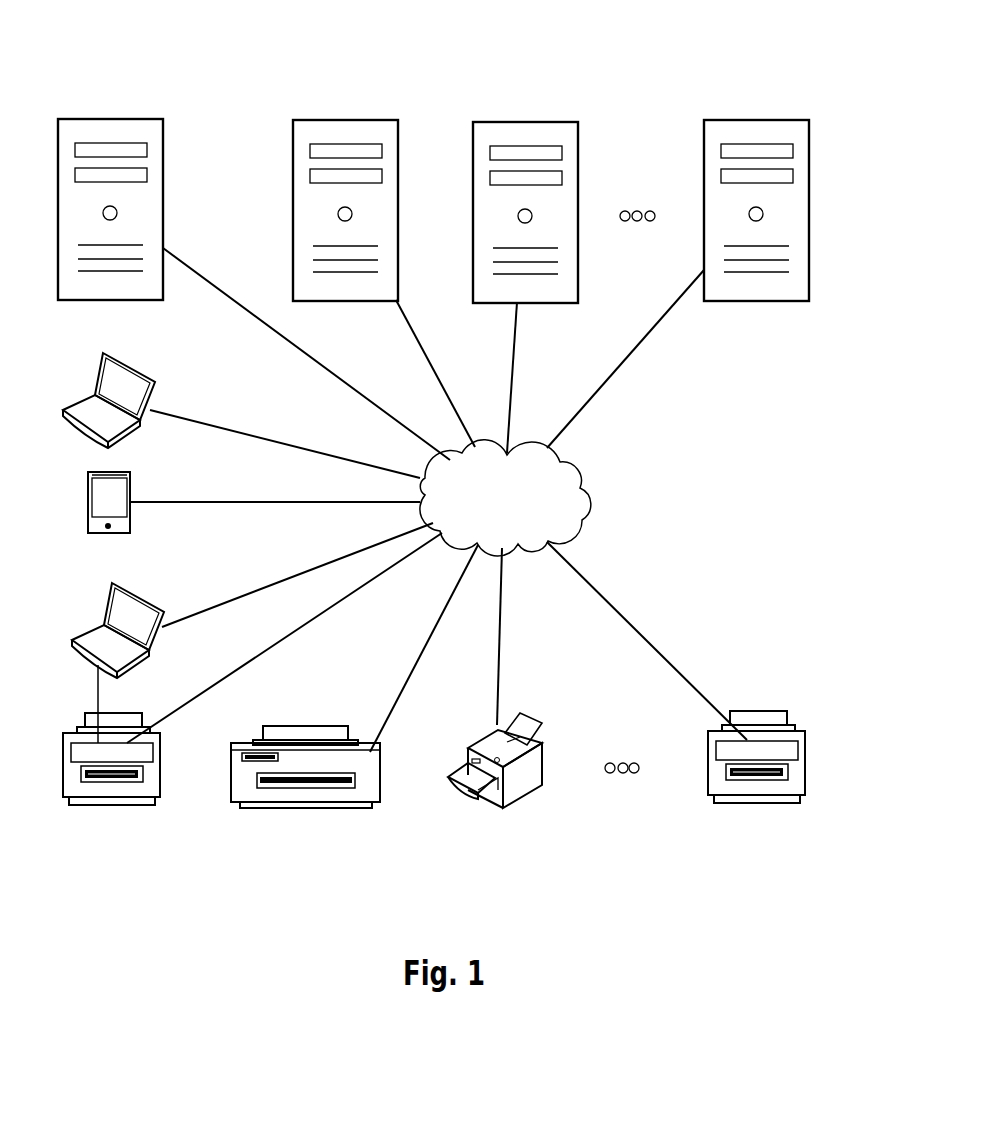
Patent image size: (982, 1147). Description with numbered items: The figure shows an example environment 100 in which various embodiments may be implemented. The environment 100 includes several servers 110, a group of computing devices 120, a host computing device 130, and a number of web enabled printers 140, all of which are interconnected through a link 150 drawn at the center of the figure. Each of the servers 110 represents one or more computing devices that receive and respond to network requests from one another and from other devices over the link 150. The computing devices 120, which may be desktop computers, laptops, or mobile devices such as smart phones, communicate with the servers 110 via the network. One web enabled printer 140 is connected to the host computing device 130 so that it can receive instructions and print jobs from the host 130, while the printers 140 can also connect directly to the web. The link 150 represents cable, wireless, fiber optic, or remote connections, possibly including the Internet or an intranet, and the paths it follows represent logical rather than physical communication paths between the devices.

The environment 100 is at (566, 38).
The servers 110 is at (110, 119).
The computing devices 120 is at (150, 372).
The host computing device 130 is at (142, 593).
The web enabled printers 140 is at (105, 808).
The link 150 is at (582, 462).